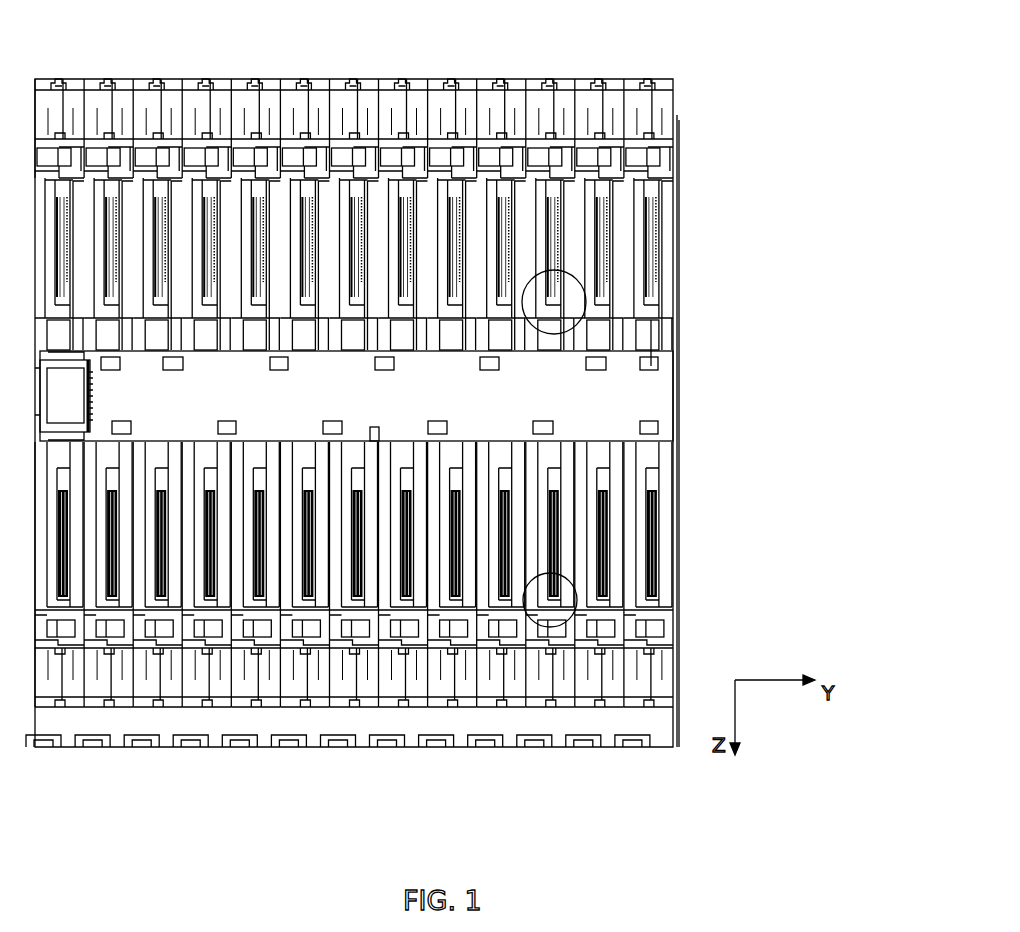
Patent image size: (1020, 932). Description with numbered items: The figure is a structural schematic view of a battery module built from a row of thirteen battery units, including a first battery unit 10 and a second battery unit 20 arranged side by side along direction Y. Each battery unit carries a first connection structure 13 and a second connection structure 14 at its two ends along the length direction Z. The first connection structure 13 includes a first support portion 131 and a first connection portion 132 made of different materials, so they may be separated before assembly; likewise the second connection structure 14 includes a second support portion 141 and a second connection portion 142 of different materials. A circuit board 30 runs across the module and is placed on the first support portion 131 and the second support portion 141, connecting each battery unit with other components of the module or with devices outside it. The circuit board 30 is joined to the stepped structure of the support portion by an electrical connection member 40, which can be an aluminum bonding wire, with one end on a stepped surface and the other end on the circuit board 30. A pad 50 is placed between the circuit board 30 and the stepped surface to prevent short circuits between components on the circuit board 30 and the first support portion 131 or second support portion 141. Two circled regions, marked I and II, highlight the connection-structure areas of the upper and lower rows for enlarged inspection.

The first battery unit 10 is at (655, 79).
The second battery unit 20 is at (593, 79).
The circuit board 30 is at (650, 392).
The electrical connection member 40 is at (655, 348).
The pad 50 is at (680, 407).
The first connection structure 13 is at (437, 526).
The first support portion 131 is at (655, 452).
The first connection portion 132 is at (655, 484).
The second connection structure 14 is at (426, 264).
The second support portion 141 is at (655, 326).
The second connection portion 142 is at (654, 292).
The detail region I is at (578, 278).
The detail region II is at (580, 590).